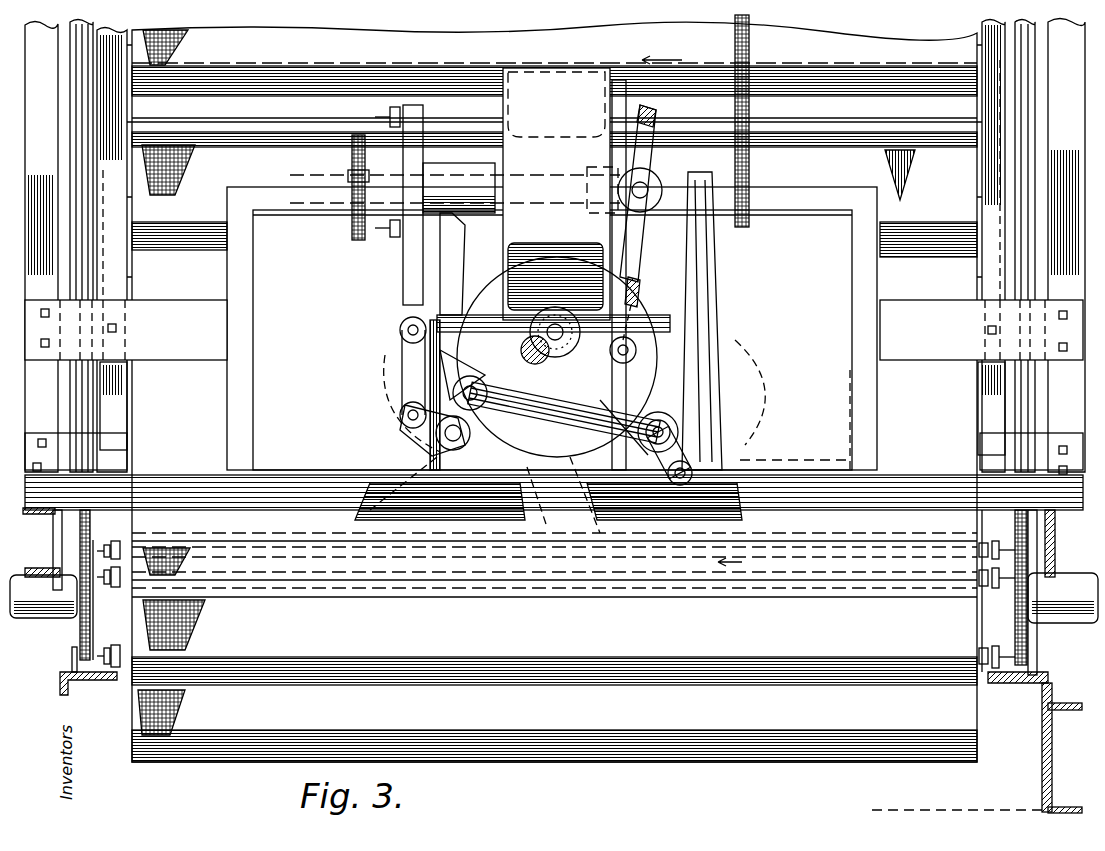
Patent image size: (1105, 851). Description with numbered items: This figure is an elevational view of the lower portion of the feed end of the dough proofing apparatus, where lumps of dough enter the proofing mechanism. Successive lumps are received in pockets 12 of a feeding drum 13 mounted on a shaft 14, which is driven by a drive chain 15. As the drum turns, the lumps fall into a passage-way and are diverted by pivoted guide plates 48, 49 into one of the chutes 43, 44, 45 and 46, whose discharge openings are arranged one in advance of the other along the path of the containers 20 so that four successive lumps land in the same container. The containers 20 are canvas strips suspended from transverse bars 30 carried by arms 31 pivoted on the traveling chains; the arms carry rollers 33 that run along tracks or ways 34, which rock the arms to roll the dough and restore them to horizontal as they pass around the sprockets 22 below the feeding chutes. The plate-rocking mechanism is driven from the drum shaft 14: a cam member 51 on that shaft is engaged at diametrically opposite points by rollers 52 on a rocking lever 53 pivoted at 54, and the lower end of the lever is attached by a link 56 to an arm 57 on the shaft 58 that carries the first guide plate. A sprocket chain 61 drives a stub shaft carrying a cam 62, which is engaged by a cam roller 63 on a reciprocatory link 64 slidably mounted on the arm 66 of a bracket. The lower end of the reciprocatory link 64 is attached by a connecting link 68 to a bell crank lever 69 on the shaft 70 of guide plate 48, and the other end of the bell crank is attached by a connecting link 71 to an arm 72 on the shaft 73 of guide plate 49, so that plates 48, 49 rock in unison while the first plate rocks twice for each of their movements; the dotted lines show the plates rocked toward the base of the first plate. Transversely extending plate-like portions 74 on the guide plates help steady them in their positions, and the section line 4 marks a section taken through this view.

The section line 4 is at (648, 105).
The pockets 12 is at (548, 245).
The feeding drum 13 is at (455, 194).
The shaft 14 is at (460, 222).
The drive chain 15 is at (750, 157).
The containers 20 is at (192, 418).
The sprockets 22 is at (127, 438).
The bars 30 is at (973, 540).
The arms 31 is at (113, 645).
The rollers 33 is at (113, 541).
The tracks or ways 34 is at (1047, 30).
The chute 43 is at (325, 462).
The chute 44 is at (735, 506).
The chute 45 is at (527, 513).
The chute 46 is at (764, 456).
The guide plate 48 is at (500, 400).
The guide plate 49 is at (655, 418).
The cam member 51 is at (655, 140).
The rollers 52 is at (658, 113).
The rocking lever 53 is at (660, 281).
The pivot 54 is at (648, 186).
The link 56 is at (565, 388).
The arm 57 is at (556, 322).
The shaft 58 is at (548, 340).
The sprocket chain 61 is at (352, 159).
The cam 62 is at (348, 178).
The cam roller 63 is at (390, 114).
The reciprocatory link 64 is at (403, 272).
The arm 66 is at (432, 177).
The connecting link 68 is at (400, 340).
The bell crank lever 69 is at (430, 441).
The shaft 70 is at (497, 440).
The connecting link 71 is at (650, 472).
The arm 72 is at (684, 482).
The shaft 73 is at (712, 438).
The plate-like portions 74 is at (758, 400).